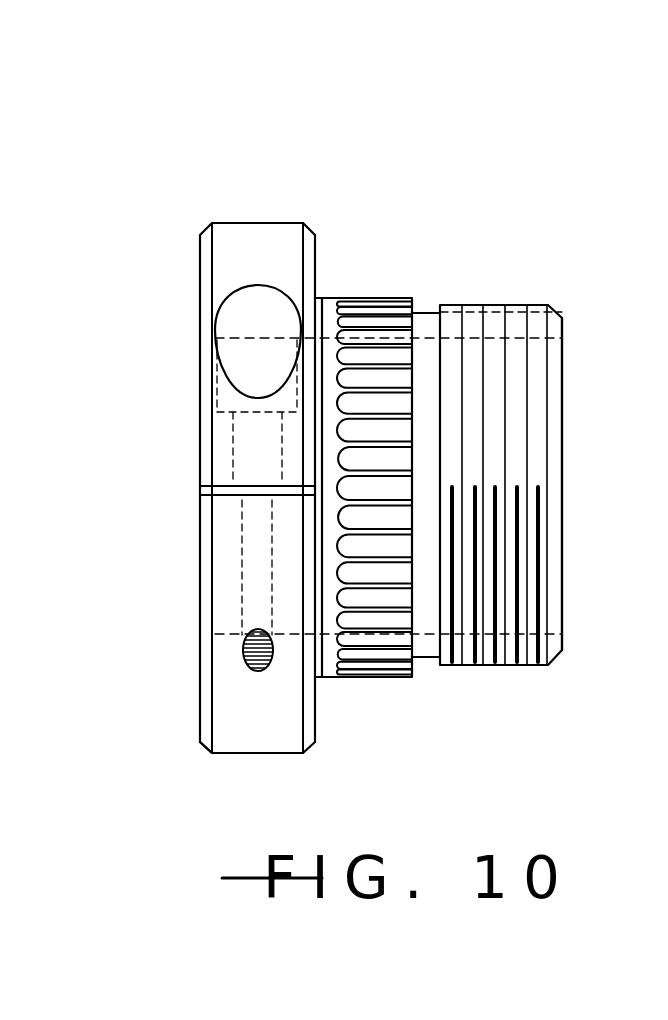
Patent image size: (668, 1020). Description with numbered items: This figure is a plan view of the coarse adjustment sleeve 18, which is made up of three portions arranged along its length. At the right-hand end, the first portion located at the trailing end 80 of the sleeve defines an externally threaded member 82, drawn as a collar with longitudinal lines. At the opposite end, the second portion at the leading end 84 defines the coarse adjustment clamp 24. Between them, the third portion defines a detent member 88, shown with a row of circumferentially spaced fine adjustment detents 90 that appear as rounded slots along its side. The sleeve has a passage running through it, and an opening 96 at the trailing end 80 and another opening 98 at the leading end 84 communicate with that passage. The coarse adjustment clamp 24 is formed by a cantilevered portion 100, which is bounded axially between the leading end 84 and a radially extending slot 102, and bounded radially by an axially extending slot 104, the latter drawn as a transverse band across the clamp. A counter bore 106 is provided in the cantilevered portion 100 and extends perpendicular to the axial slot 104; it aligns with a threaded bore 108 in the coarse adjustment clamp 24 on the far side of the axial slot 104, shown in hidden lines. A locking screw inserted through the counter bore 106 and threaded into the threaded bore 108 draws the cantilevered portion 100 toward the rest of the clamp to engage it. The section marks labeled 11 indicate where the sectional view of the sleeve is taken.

The section line 11- 11 is at (329, 137).
The coarse adjustment sleeve 18 is at (459, 158).
The coarse adjustment clamp 24 is at (238, 208).
The trailing end 80 is at (562, 614).
The externally threaded member 82 is at (527, 308).
The leading end 84 is at (200, 721).
The detent member 88 is at (332, 284).
The fine adjustment detents 90 is at (392, 345).
The opening 96 is at (538, 440).
The opening 98 is at (205, 613).
The cantilevered portion 100 is at (237, 258).
The radially extending slot 102 is at (320, 328).
The axially extending slot 104 is at (203, 489).
The counter bore 106 is at (247, 347).
The threaded bore 108 is at (247, 551).